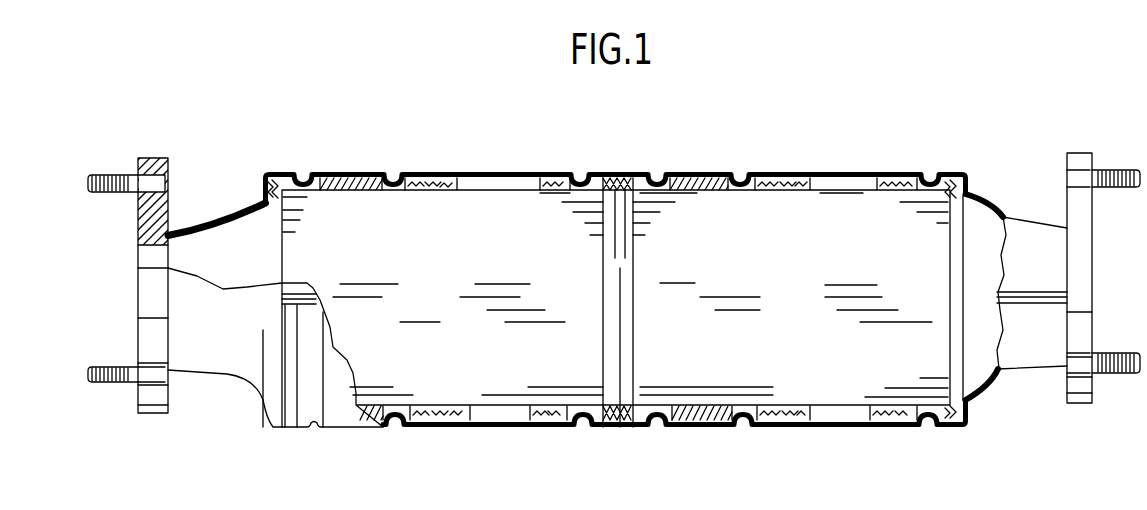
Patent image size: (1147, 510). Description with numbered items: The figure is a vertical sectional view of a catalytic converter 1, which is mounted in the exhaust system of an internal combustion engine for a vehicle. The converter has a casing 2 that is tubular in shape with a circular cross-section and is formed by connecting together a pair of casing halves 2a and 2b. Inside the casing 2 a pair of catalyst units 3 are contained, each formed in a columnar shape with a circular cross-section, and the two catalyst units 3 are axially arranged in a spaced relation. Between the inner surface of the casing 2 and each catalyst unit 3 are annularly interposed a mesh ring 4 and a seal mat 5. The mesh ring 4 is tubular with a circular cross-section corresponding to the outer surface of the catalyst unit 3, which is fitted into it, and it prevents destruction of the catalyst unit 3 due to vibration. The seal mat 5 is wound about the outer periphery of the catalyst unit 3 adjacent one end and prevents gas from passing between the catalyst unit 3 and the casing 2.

The catalytic converter 1 is at (438, 153).
The casing 2 is at (680, 174).
The casing half 2a is at (1025, 232).
The casing half 2b is at (1015, 362).
The catalyst unit 3 is at (436, 307).
The mesh ring 4 is at (478, 180).
The seal mat 5 is at (343, 178).